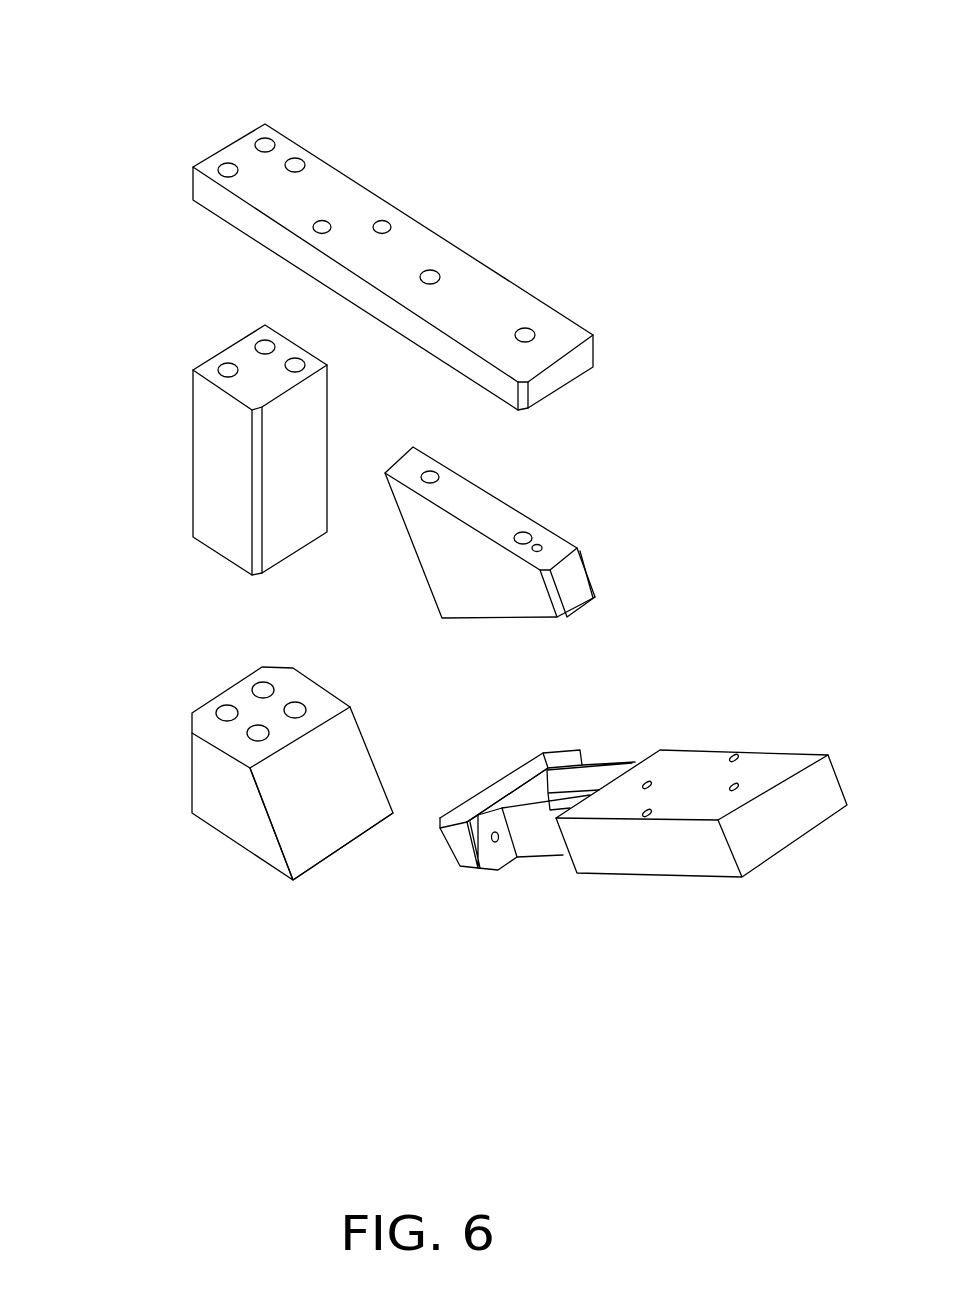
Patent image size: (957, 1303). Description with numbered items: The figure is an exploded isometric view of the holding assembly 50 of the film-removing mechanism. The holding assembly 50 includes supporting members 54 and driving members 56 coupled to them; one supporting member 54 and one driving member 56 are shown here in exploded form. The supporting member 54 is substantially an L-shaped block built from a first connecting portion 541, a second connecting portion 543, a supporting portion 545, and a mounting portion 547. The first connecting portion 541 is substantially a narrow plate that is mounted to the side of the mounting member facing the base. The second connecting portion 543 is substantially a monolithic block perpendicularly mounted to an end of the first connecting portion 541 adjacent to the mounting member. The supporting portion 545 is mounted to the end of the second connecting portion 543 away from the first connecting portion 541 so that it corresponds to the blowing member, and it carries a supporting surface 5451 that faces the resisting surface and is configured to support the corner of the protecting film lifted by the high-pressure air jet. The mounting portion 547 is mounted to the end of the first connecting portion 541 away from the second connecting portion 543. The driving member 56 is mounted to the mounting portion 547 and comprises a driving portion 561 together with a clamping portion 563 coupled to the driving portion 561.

The holding assembly 50 is at (533, 30).
The supporting member 54 is at (107, 278).
The first connecting portion 541 is at (258, 231).
The second connecting portion 543 is at (212, 460).
The supporting portion 545 is at (203, 720).
The supporting surface 5451 is at (313, 845).
The mounting portion 547 is at (430, 543).
The driving member 56 is at (637, 943).
The driving portion 561 is at (600, 862).
The clamping portion 563 is at (463, 857).